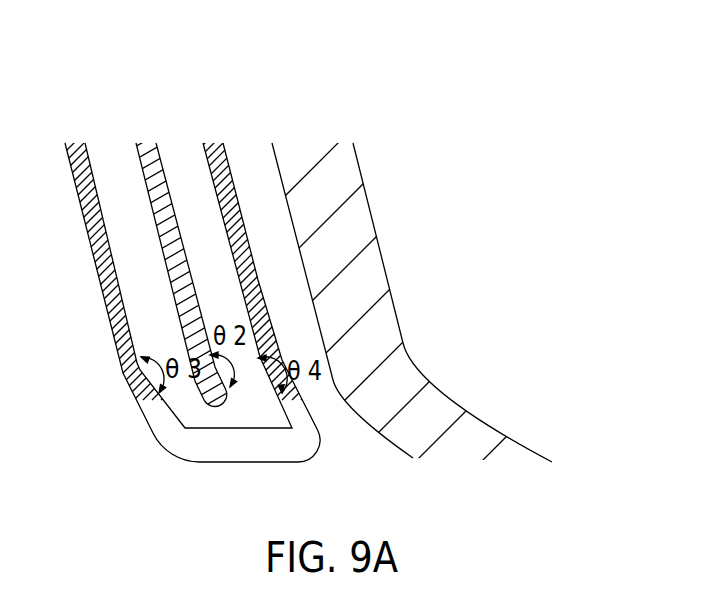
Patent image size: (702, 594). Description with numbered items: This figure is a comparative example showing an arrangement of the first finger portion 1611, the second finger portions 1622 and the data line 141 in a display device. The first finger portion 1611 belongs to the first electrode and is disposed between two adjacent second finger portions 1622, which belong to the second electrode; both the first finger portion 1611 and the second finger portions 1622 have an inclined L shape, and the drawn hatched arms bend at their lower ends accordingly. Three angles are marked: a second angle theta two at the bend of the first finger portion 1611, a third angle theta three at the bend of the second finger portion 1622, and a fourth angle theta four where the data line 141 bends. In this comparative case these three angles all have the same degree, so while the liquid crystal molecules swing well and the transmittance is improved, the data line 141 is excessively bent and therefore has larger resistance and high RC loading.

The data line 141 is at (357, 229).
The first finger portion 1611 is at (148, 153).
The second finger portion 1622 is at (216, 150).